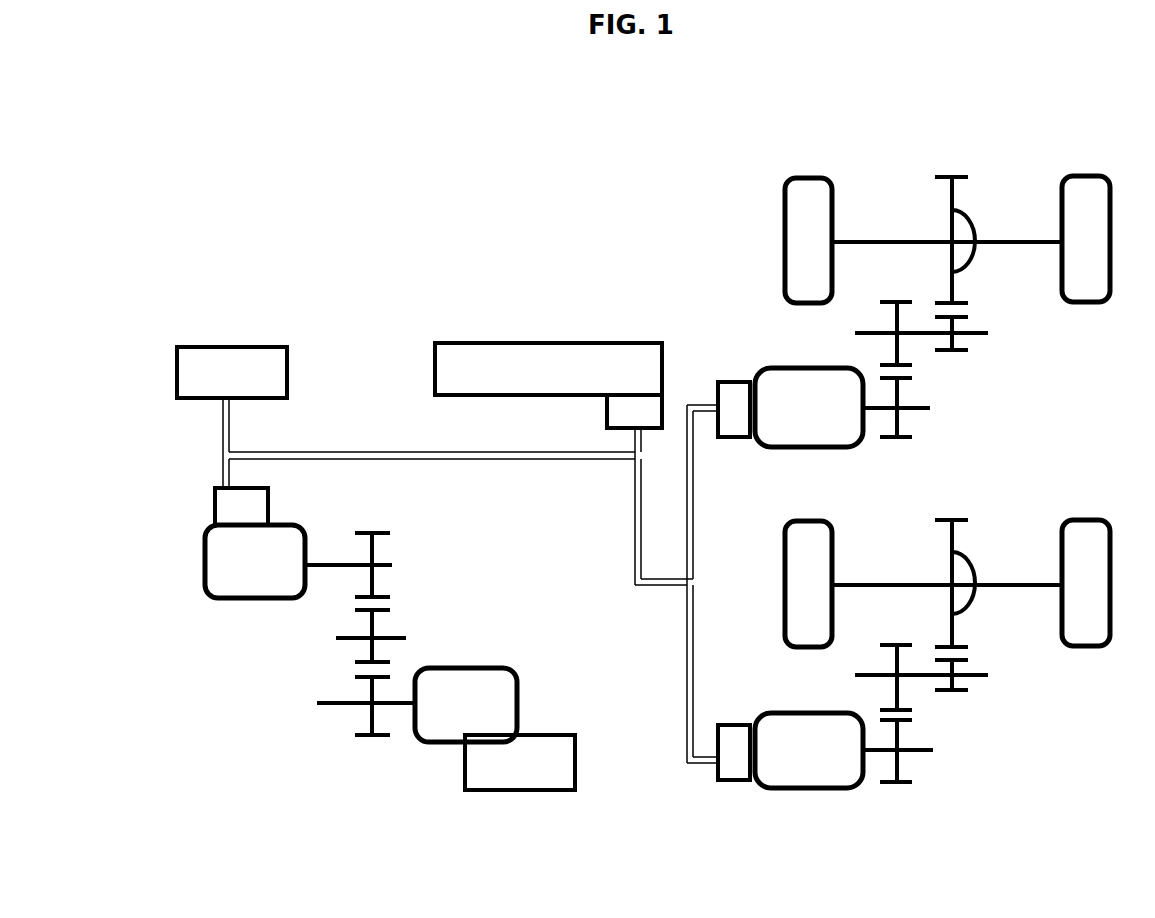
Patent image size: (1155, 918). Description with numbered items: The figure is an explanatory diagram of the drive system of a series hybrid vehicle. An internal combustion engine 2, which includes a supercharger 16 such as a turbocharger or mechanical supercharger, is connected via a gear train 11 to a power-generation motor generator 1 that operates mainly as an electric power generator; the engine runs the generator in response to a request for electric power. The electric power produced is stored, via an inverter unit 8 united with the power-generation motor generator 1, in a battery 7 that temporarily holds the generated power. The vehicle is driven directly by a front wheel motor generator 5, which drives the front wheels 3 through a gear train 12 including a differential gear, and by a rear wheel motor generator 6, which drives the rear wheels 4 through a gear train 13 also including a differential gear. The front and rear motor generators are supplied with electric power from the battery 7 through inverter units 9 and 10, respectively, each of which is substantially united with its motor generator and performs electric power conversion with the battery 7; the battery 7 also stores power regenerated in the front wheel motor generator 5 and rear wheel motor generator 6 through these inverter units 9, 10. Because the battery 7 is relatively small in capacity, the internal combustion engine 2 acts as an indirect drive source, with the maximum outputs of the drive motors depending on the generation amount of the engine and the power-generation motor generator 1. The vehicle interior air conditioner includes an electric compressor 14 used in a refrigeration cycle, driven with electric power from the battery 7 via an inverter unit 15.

The power-generation motor generator 1 is at (202, 578).
The internal combustion engine 2 is at (500, 683).
The front wheels 3 is at (808, 195).
The rear wheels 4 is at (1087, 528).
The front wheel motor generator 5 is at (820, 423).
The rear wheel motor generator 6 is at (818, 773).
The battery 7 is at (257, 345).
The inverter unit 8 is at (230, 508).
The inverter unit 9 is at (734, 393).
The inverter unit 10 is at (738, 735).
The gear train 11 is at (388, 617).
The gear train 12 is at (928, 358).
The gear train 13 is at (928, 693).
The electric compressor 14 is at (619, 345).
The inverter unit 15 is at (623, 408).
The supercharger 16 is at (516, 768).